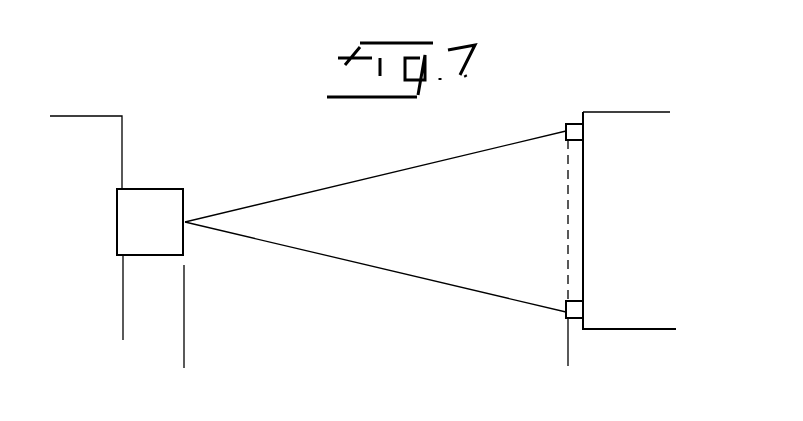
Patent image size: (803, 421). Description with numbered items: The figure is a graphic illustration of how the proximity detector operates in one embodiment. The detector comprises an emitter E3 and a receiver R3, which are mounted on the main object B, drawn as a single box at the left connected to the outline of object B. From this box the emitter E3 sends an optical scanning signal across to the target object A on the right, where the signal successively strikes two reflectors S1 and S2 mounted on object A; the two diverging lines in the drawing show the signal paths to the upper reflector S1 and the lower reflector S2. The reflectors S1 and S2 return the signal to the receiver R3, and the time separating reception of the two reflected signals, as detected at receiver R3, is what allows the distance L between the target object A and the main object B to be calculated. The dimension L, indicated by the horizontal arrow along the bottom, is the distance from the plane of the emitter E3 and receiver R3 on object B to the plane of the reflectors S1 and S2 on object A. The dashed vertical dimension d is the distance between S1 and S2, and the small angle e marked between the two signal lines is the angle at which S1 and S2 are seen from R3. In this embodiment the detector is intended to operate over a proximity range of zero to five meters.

The main object B is at (94, 92).
The target object A is at (629, 88).
The emitter E3 is at (150, 222).
The receiver R3 is at (150, 222).
The reflector S1 is at (568, 124).
The reflector S2 is at (570, 318).
The angle e is at (279, 200).
The distance between reflectors d is at (555, 220).
The distance L is at (184, 351).